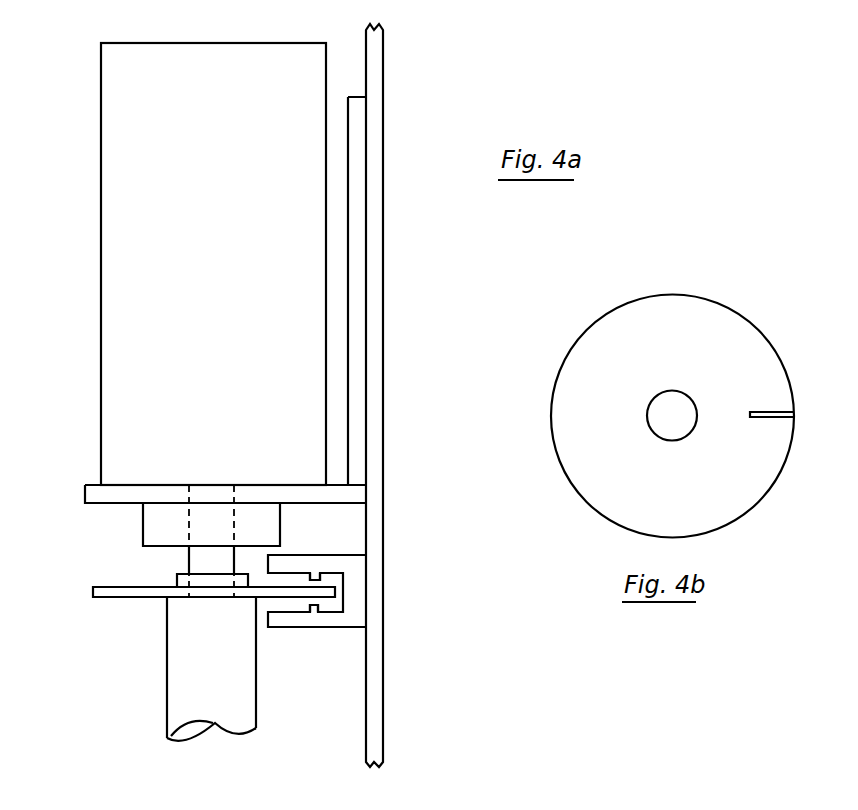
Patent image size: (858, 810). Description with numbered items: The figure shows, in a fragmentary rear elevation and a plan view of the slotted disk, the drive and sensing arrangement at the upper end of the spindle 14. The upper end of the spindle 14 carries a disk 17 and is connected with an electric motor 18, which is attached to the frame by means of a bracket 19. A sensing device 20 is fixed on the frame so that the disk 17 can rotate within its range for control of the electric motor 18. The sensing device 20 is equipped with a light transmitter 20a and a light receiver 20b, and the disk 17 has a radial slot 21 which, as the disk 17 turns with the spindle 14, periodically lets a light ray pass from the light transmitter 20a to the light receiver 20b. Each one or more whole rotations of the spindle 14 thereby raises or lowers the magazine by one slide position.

In FIG. 4A, the spindle 14 is at (182, 697).
In FIG. 4A, the disk 17 is at (116, 597).
In FIG. 4B, the disk 17 is at (732, 342).
In FIG. 4A, the electric motor 18 is at (120, 297).
In FIG. 4A, the bracket 19 is at (358, 284).
In FIG. 4A, the sensing device 20 is at (355, 590).
In FIG. 4A, the light transmitter 20a is at (318, 581).
In FIG. 4A, the light receiver 20b is at (308, 604).
In FIG. 4B, the slot 21 is at (773, 417).